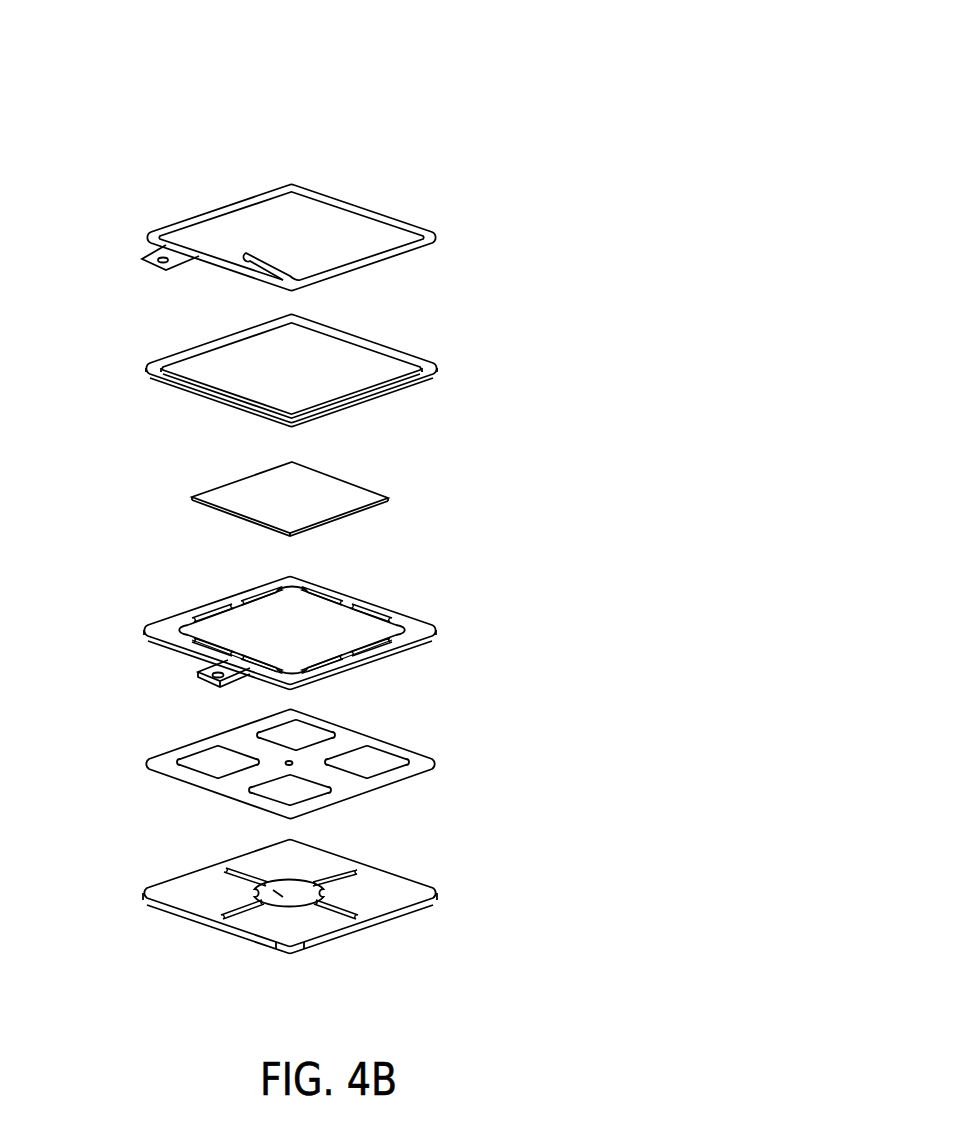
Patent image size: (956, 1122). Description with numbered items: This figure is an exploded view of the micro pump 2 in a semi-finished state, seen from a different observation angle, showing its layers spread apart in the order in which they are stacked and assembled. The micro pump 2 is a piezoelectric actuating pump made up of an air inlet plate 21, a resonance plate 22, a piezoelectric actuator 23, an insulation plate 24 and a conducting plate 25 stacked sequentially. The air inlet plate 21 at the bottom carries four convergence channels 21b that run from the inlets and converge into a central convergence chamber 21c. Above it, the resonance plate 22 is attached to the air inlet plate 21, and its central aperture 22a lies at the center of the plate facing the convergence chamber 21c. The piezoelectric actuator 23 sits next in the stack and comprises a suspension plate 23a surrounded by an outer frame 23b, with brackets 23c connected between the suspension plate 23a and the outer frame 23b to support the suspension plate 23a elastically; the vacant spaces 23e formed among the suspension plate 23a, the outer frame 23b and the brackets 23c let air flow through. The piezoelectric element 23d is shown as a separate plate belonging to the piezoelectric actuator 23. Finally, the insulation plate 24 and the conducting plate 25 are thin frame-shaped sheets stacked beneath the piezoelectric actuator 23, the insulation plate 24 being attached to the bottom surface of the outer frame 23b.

The micro pump 2 is at (629, 43).
The air inlet plate 21 is at (330, 878).
The convergence channel 21b is at (240, 910).
The convergence chamber 21c is at (270, 885).
The resonance plate 22 is at (350, 748).
The central aperture 22a is at (288, 762).
The piezoelectric actuator 23 is at (387, 590).
The suspension plate 23a is at (355, 632).
The outer frame 23b is at (415, 630).
The bracket 23c is at (359, 630).
The piezoelectric element 23d is at (388, 483).
The vacant space 23e is at (308, 592).
The insulation plate 24 is at (434, 340).
The conducting plate 25 is at (435, 215).